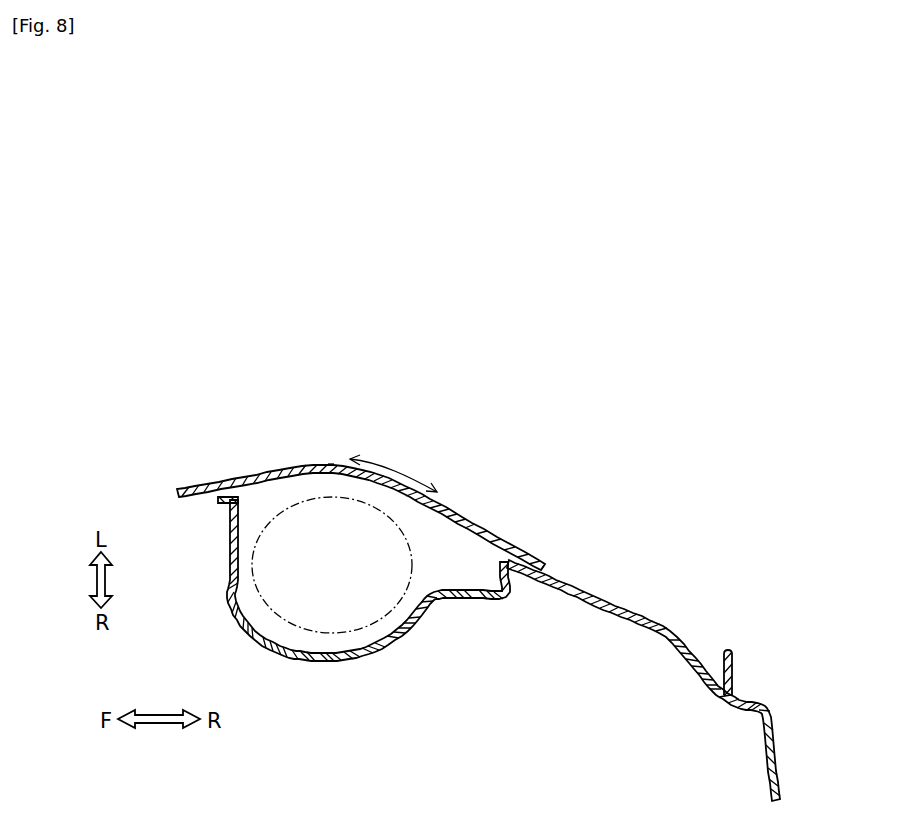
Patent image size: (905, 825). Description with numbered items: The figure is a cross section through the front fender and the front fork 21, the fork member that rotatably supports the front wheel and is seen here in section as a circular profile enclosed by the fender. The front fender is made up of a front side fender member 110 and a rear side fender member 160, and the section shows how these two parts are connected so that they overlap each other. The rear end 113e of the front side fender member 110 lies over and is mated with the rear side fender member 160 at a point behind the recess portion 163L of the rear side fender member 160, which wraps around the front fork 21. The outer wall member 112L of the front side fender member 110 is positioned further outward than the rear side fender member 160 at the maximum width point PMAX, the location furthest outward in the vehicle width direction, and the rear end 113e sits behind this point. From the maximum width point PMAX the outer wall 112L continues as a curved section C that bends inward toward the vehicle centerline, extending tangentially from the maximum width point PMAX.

The front side fender member 110 is at (189, 486).
The outer wall member 112L is at (259, 472).
The rear end 113e is at (538, 560).
The front fork 21 is at (413, 557).
The rear side fender member 160 is at (667, 622).
The recess portion 163L is at (392, 650).
The curved section C is at (413, 478).
The maximum width point PMAX is at (331, 464).